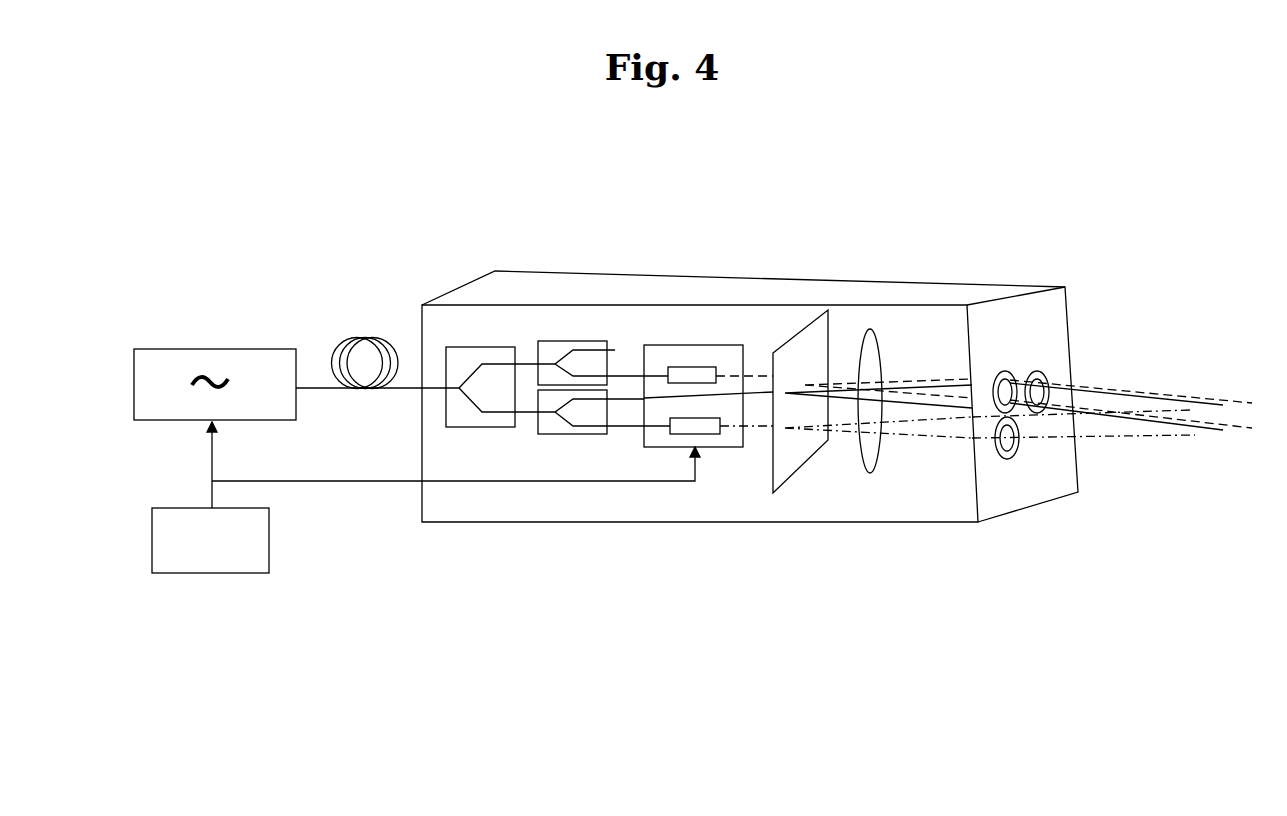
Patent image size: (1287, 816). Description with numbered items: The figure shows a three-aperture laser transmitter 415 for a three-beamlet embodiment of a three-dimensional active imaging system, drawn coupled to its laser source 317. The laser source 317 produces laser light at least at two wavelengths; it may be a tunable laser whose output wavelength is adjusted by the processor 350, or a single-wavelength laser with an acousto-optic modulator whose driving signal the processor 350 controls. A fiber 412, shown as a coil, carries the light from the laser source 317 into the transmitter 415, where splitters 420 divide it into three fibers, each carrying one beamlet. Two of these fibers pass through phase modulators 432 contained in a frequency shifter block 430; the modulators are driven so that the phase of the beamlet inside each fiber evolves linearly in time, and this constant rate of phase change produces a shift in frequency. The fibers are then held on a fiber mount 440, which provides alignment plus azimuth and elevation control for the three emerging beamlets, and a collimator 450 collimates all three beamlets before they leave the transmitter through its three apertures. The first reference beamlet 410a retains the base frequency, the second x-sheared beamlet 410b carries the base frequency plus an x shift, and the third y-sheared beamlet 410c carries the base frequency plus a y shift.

The laser source 317 is at (263, 356).
The processor 350 is at (210, 540).
The fiber 412 is at (363, 343).
The laser transmitter 415 is at (893, 512).
The splitters 420 is at (551, 345).
The frequency shifter block 430 is at (714, 345).
The phase modulator 432 is at (677, 367).
The fiber mount 440 is at (818, 345).
The collimator 450 is at (870, 355).
The first reference beamlet 410a is at (1015, 380).
The second x-sheared beamlet 410b is at (1230, 402).
The third y-sheared beamlet 410c is at (1037, 445).